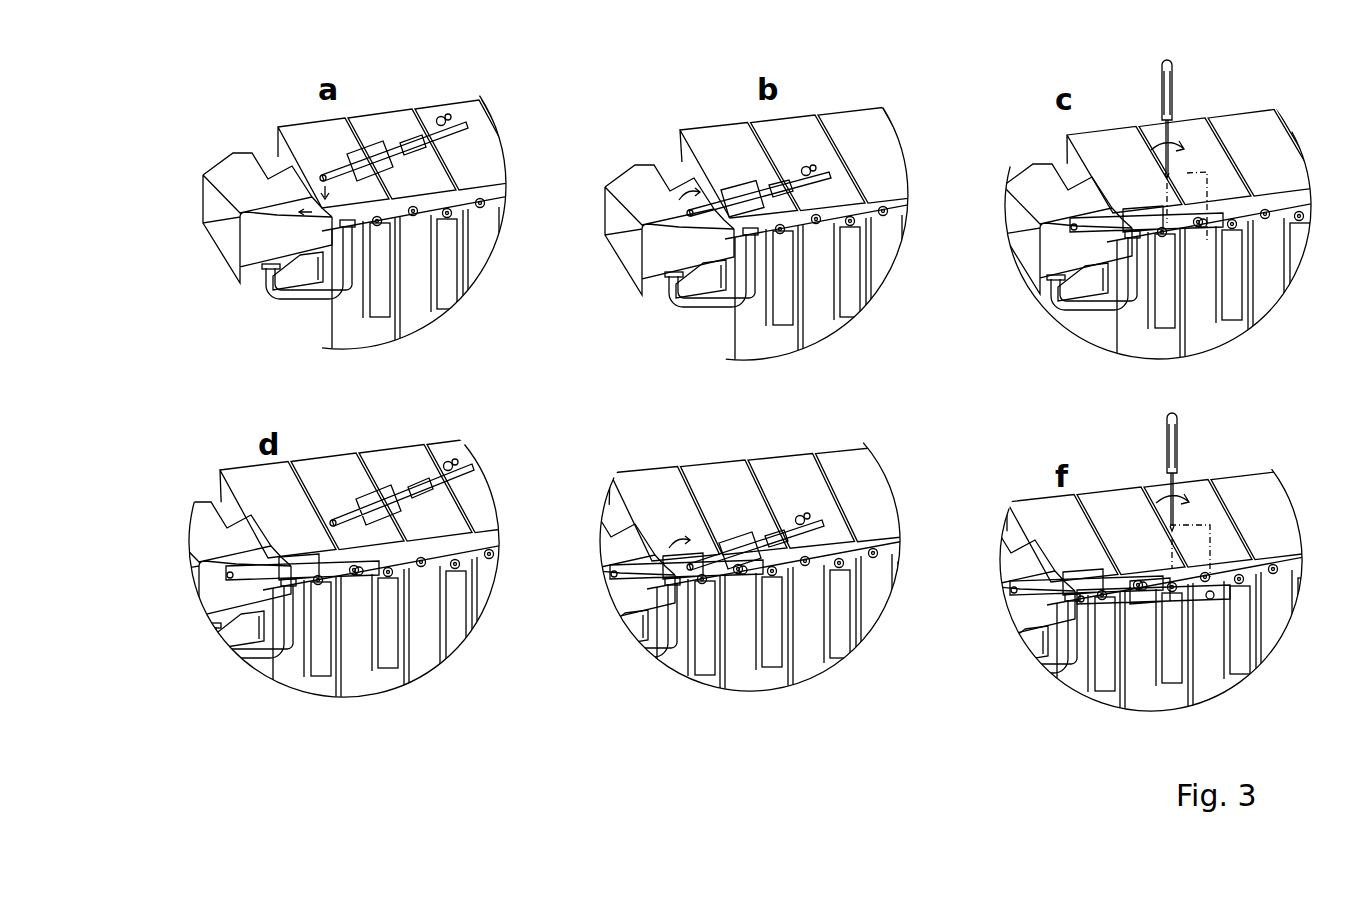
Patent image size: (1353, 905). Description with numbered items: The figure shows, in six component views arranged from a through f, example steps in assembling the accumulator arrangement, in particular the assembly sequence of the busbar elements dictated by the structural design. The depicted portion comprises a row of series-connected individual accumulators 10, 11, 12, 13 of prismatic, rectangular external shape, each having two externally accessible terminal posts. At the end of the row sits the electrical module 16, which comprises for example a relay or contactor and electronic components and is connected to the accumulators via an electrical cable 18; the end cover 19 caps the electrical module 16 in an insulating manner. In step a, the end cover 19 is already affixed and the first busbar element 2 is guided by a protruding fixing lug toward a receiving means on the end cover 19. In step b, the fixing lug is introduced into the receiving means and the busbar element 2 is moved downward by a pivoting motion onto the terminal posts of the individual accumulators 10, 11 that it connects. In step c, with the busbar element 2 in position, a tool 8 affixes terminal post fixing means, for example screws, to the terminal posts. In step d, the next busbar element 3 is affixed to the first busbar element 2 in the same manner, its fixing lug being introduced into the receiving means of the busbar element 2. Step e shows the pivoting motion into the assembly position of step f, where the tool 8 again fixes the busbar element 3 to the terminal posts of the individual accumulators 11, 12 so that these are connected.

The first busbar element 2 is at (460, 135).
The busbar element 3 is at (473, 480).
The tool 8 is at (1162, 80).
The individual accumulator 10 is at (305, 137).
The individual accumulator 11 is at (385, 120).
The individual accumulator 12 is at (470, 112).
The individual accumulator 13 is at (1292, 143).
The electrical module 16 is at (282, 278).
The electrical cable 18 is at (292, 303).
The end cover 19 is at (213, 176).